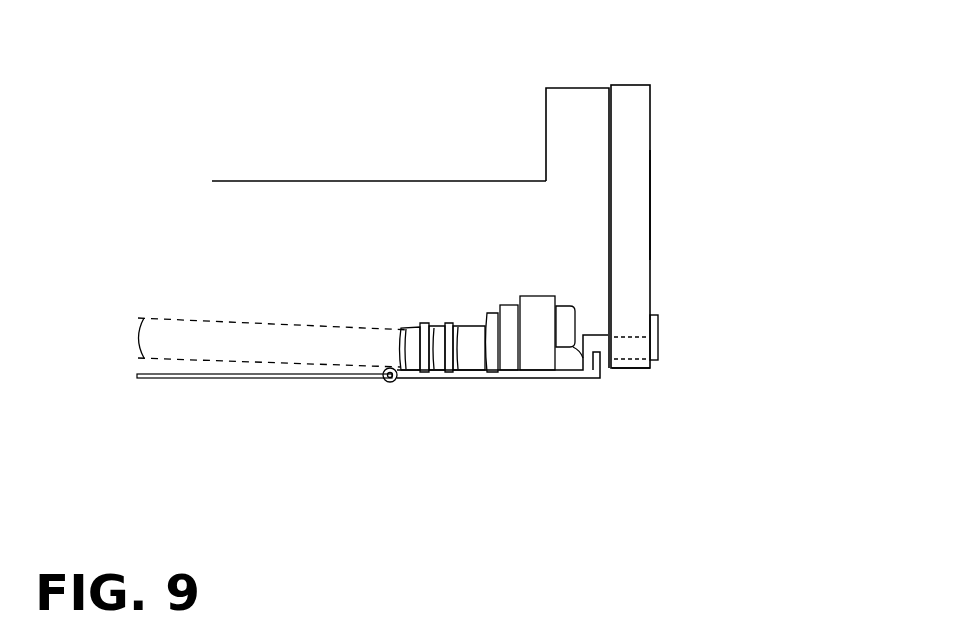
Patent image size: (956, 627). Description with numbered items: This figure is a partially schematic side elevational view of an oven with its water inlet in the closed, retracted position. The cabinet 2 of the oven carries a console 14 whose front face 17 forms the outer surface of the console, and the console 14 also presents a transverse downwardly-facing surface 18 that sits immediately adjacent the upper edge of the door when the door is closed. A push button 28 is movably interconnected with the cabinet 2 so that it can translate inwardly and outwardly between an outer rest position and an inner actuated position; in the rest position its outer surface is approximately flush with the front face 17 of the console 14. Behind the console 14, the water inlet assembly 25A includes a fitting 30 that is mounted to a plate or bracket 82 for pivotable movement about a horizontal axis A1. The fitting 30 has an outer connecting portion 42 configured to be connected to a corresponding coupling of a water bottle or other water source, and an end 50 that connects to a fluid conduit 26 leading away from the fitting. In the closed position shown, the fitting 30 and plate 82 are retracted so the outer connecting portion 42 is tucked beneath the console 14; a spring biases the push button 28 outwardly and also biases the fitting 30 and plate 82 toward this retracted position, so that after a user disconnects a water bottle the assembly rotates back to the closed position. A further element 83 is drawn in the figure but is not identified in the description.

The cabinet 2 is at (586, 88).
The console 14 is at (652, 127).
The front face of console 17 is at (652, 208).
The transverse downwardly-facing surface 18 is at (628, 370).
The push button 28 is at (660, 333).
The water inlet assembly 25A is at (343, 428).
The fluid conduit 26 is at (252, 347).
The horizontal axis A1 is at (388, 382).
The plate or bracket 82 is at (530, 383).
The end of fitting 50 is at (428, 338).
The fitting 30 is at (481, 318).
The housing 83 is at (538, 296).
The outer connecting portion 42 is at (580, 335).